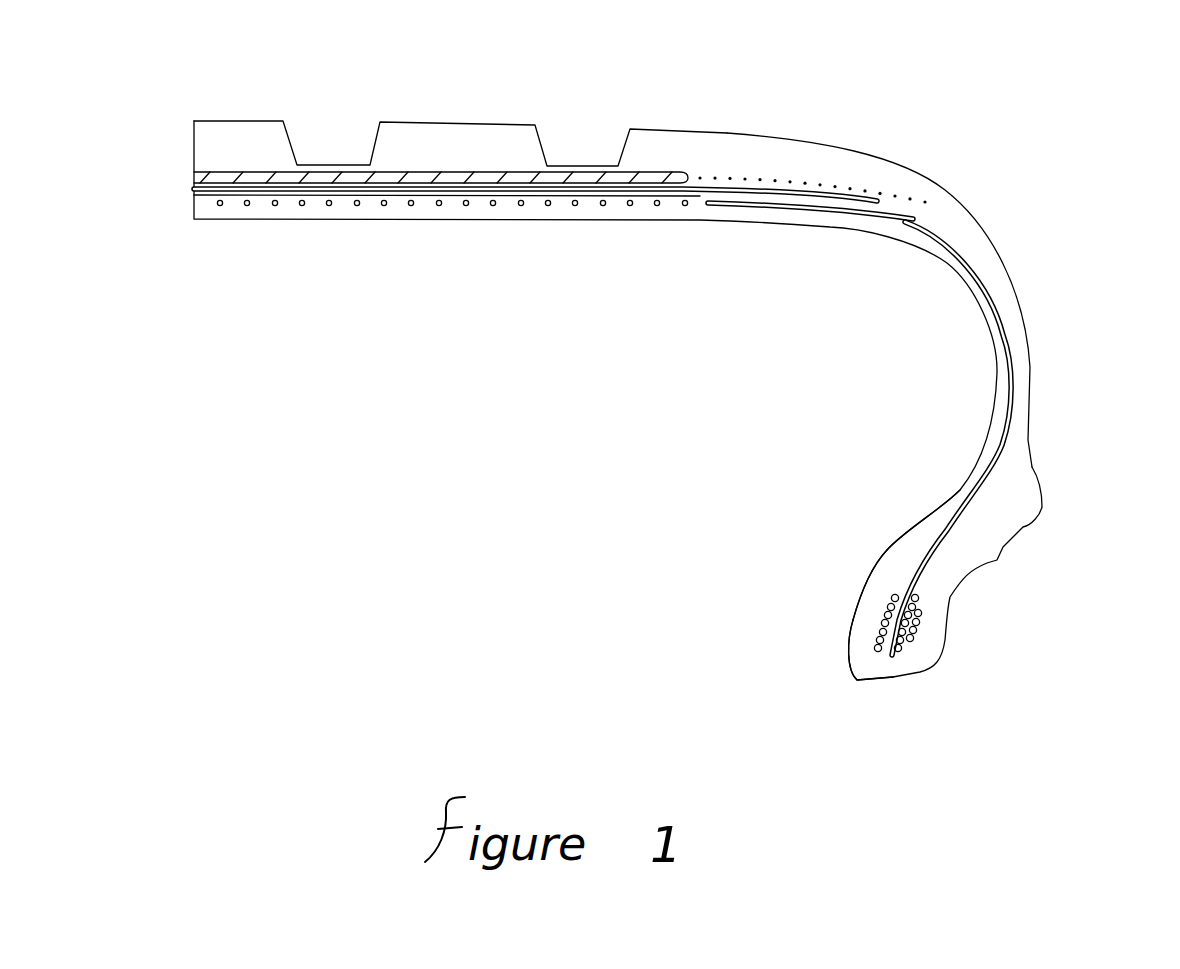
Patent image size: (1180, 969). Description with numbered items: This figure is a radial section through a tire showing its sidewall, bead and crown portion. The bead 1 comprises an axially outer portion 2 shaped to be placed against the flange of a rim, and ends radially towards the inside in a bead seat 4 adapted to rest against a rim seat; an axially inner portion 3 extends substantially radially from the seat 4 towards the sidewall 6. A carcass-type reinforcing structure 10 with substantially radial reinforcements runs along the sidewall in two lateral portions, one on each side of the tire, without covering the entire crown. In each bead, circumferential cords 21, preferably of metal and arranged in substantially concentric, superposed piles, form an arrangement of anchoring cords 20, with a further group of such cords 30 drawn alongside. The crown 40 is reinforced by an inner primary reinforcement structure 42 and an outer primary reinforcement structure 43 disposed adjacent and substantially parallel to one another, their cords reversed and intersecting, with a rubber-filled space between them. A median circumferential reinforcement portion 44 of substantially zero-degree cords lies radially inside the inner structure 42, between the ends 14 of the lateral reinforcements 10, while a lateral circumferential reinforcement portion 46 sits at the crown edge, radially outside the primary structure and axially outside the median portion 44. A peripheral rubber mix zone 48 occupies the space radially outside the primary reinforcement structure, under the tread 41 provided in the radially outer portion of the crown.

The bead 1 is at (870, 615).
The axially outer portion 2 is at (933, 633).
The axially inner portion 3 is at (862, 645).
The bead seat 4 is at (883, 680).
The sidewall 6 is at (1022, 387).
The reinforcing structure 10 is at (992, 298).
The ends of the lateral reinforcements 14 is at (710, 203).
The arrangement of anchoring cords 20 is at (876, 664).
The circumferential cords 21 is at (889, 604).
The bead wires 30 is at (926, 651).
The crown 40 is at (370, 212).
The tread 41 is at (463, 150).
The inner primary reinforcement structure 42 is at (902, 208).
The outer primary reinforcement structure 43 is at (707, 190).
The median circumferential reinforcement portion 44 is at (467, 203).
The lateral circumferential reinforcement portion 46 is at (820, 182).
The peripheral rubber mix zone 48 is at (232, 178).